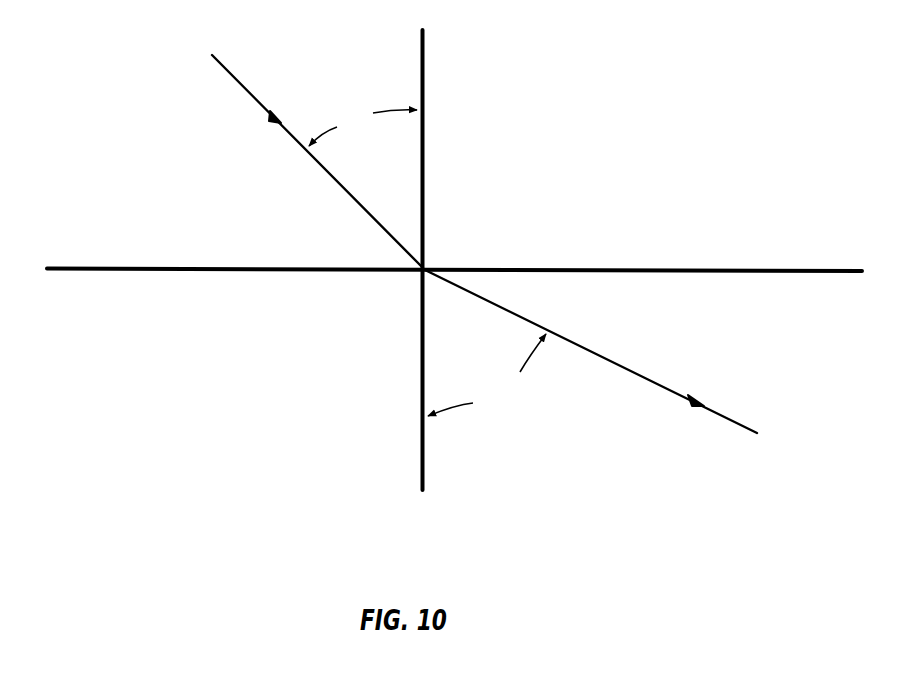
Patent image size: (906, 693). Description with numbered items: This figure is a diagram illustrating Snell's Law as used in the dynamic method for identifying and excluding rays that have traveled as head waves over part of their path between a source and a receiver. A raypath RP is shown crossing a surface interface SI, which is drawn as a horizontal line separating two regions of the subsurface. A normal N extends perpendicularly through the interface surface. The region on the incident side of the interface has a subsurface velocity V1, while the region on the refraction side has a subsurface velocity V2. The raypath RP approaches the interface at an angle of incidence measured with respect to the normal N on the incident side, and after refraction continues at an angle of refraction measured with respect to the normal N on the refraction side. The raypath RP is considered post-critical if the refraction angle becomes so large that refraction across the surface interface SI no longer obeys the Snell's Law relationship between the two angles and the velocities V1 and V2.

The raypath RP is at (462, 244).
The normal N is at (454, 260).
The surface interface SI is at (454, 241).
The velocity of the subsurface on the incident side V1 is at (547, 236).
The velocity of the subsurface on the refraction side V2 is at (378, 405).